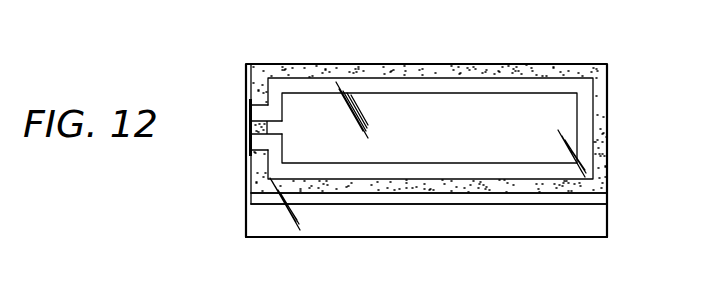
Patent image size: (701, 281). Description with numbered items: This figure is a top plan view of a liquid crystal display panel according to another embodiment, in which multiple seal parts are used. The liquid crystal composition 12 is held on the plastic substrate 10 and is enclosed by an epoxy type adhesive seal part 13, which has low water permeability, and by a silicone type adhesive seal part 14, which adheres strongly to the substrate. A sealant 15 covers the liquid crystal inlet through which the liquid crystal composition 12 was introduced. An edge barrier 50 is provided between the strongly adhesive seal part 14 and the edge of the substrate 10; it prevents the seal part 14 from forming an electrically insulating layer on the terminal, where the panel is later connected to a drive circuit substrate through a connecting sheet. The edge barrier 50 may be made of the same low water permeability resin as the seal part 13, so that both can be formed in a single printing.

The plastic substrate 10 is at (601, 229).
The liquid crystal composition 12 is at (501, 113).
The epoxy type adhesive seal part 13 is at (557, 88).
The silicone type adhesive seal part 14 is at (598, 77).
The sealant 15 is at (250, 127).
The edge barrier 50 is at (601, 200).